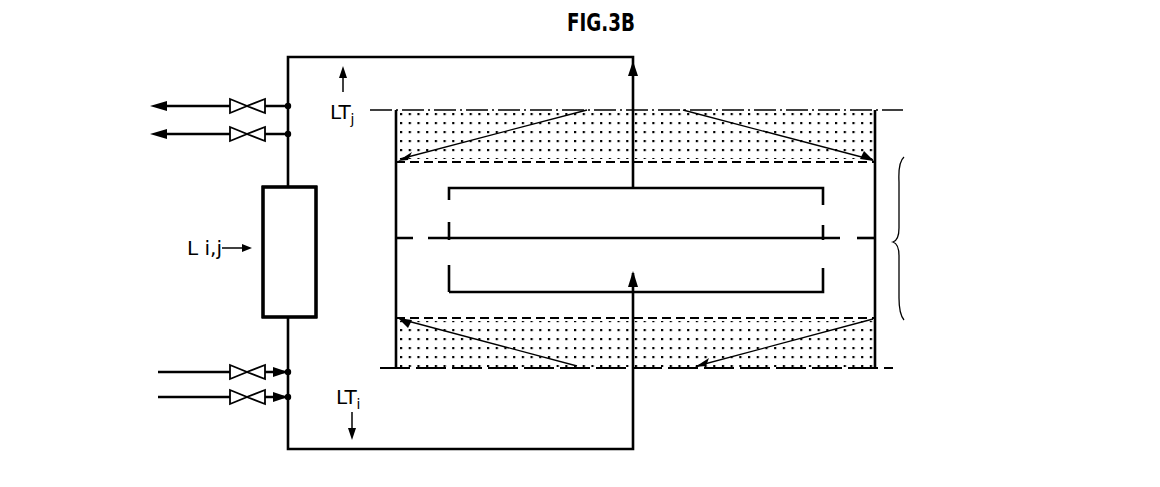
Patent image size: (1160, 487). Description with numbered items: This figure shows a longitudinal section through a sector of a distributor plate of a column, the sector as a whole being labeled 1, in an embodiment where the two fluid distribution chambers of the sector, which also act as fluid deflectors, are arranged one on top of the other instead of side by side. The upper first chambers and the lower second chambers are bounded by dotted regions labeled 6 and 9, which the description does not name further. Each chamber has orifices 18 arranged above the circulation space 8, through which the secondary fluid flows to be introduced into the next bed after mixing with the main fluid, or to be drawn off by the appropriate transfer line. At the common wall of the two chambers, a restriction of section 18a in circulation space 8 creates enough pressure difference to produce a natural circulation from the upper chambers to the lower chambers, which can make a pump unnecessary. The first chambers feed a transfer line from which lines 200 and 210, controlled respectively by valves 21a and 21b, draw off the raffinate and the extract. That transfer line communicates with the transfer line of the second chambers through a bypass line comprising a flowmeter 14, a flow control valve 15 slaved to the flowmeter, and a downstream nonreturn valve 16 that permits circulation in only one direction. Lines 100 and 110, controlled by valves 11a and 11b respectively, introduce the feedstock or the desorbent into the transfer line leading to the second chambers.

The reactor module 1 is at (622, 239).
The upper heat-exchange layer 6 is at (847, 158).
The circulation space 8 is at (636, 239).
The lower heat-exchange layer 9 is at (851, 321).
The flowmeter 14 is at (289, 252).
The flow control valve 15 is at (289, 252).
The downstream nonreturn valve 16 is at (289, 252).
The orifices 18 is at (452, 211).
The restriction of section 18a is at (421, 241).
The valve 21a is at (268, 95).
The valve 21b is at (266, 140).
The valve 11a is at (266, 366).
The valve 11b is at (268, 402).
The line 100 is at (204, 368).
The line 110 is at (208, 402).
The line 200 is at (206, 103).
The line 210 is at (206, 138).